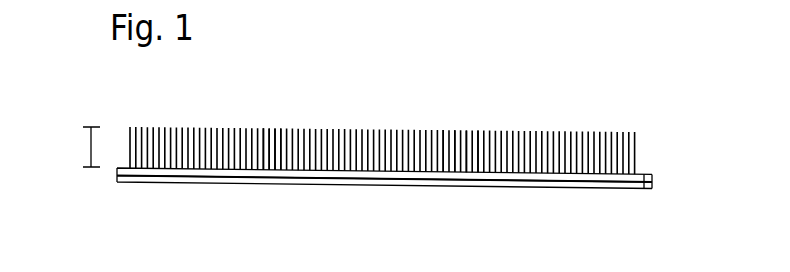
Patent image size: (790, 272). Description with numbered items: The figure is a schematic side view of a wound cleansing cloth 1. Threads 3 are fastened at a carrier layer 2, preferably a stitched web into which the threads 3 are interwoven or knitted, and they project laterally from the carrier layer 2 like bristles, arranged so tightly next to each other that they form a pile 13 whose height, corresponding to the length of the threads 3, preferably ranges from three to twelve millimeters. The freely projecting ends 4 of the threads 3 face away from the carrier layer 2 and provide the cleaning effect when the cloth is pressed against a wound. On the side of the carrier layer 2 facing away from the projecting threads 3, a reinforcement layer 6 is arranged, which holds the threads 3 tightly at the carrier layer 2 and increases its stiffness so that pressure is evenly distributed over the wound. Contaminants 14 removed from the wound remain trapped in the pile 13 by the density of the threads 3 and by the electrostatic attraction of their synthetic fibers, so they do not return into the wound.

The wound cleansing cloth 1 is at (648, 95).
The carrier layer 2 is at (645, 175).
The threads 3 is at (466, 149).
The freely projecting ends 4 is at (350, 130).
The reinforcement layer 6 is at (645, 185).
The pile 13 is at (90, 147).
The contaminants 14 is at (282, 137).